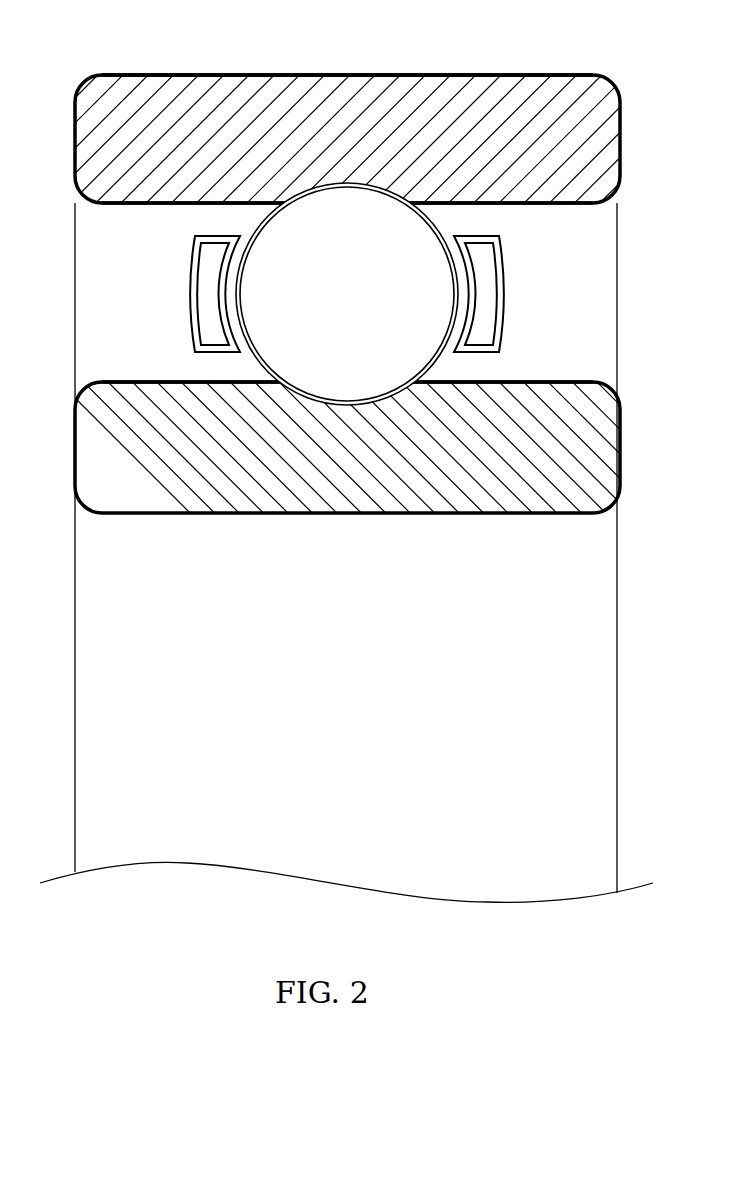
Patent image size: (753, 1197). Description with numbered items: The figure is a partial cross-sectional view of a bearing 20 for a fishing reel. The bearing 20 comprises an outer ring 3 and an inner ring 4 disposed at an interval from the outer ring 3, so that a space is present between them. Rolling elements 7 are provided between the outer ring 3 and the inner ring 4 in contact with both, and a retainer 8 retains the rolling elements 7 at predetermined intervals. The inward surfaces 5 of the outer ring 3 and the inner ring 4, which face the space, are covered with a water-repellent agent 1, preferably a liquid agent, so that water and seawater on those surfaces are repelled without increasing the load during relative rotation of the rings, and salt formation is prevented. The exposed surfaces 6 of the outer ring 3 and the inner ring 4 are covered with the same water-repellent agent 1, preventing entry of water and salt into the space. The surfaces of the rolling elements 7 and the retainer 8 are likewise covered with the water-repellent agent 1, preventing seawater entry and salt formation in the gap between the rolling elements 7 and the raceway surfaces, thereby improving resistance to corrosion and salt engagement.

The water-repellent agent 1 is at (547, 75).
The outer ring 3 is at (100, 130).
The inner ring 4 is at (100, 460).
The inward surfaces 5 is at (548, 203).
The exposed surfaces 6 is at (443, 75).
The rolling elements 7 is at (280, 295).
The retainer 8 is at (485, 283).
The bearing 20 is at (668, 50).